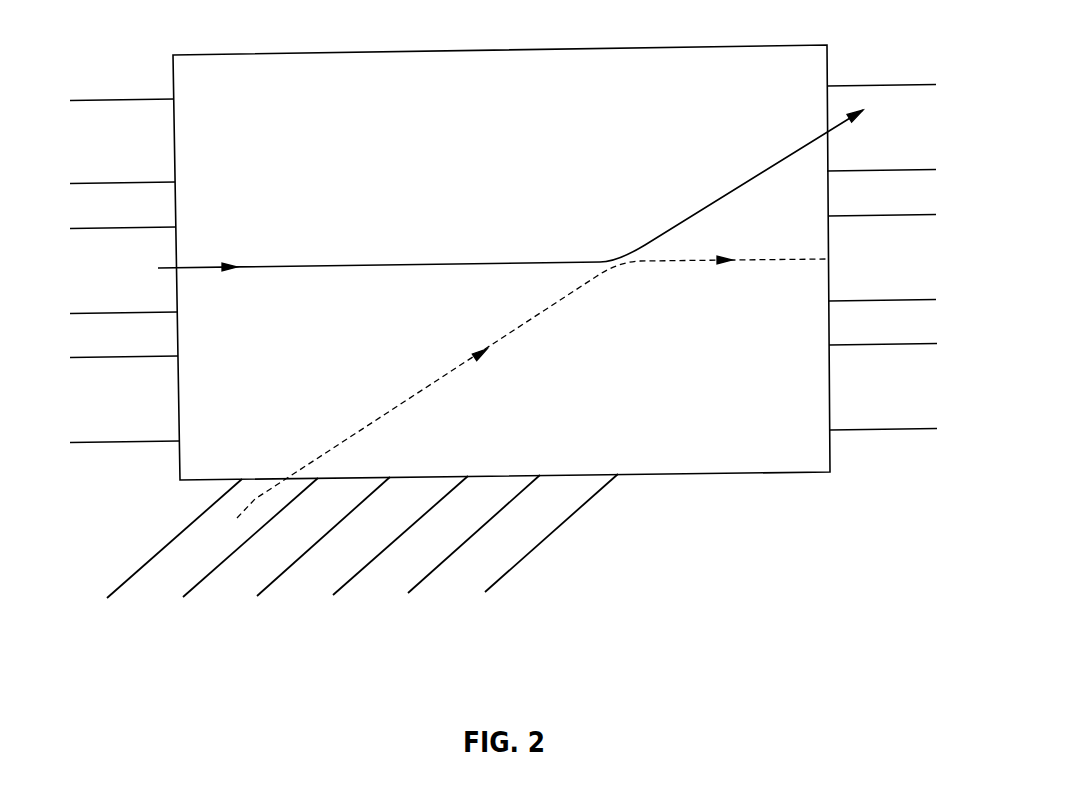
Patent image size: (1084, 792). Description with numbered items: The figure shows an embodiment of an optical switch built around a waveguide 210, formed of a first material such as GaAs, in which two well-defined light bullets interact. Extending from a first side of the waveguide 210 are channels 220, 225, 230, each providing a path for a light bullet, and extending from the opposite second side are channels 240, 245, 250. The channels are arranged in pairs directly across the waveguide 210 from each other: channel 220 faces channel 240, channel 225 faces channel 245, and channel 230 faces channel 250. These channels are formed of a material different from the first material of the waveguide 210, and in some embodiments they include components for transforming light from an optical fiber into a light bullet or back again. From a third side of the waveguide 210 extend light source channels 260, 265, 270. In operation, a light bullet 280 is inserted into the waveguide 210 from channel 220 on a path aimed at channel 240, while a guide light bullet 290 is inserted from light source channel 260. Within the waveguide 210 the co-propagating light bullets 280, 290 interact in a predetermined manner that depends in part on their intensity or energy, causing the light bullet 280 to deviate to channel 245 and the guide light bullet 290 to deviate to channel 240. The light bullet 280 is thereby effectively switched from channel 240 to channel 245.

The waveguide 210 is at (522, 133).
The channel 220 is at (147, 285).
The channel 225 is at (144, 153).
The channel 230 is at (149, 413).
The channel 240 is at (906, 273).
The channel 245 is at (902, 141).
The channel 250 is at (907, 401).
The light source channel 260 is at (195, 558).
The light source channel 265 is at (342, 557).
The light source channel 270 is at (493, 555).
The light bullet 280 is at (330, 265).
The guide light bullet 290 is at (438, 380).